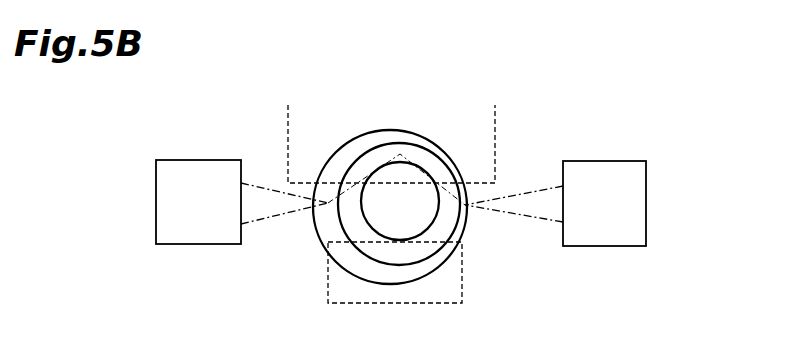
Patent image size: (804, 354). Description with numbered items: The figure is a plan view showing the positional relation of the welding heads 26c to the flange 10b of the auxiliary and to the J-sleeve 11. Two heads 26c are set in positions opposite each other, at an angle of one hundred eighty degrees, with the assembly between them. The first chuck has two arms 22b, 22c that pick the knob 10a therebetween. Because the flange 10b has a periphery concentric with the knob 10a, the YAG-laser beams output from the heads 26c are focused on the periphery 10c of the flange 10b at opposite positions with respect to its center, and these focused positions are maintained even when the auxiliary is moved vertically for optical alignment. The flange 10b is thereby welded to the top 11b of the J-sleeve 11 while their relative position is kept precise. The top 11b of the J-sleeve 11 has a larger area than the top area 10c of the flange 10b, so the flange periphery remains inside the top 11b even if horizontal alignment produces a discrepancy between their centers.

The knob 10a is at (424, 213).
The flange 10b is at (377, 162).
The periphery of the flange 10c is at (350, 160).
The J-sleeve 11 is at (314, 216).
The top of the J-sleeve 11b is at (323, 230).
The arm 22b is at (495, 142).
The arm 22c is at (462, 292).
The head 26c is at (197, 172).